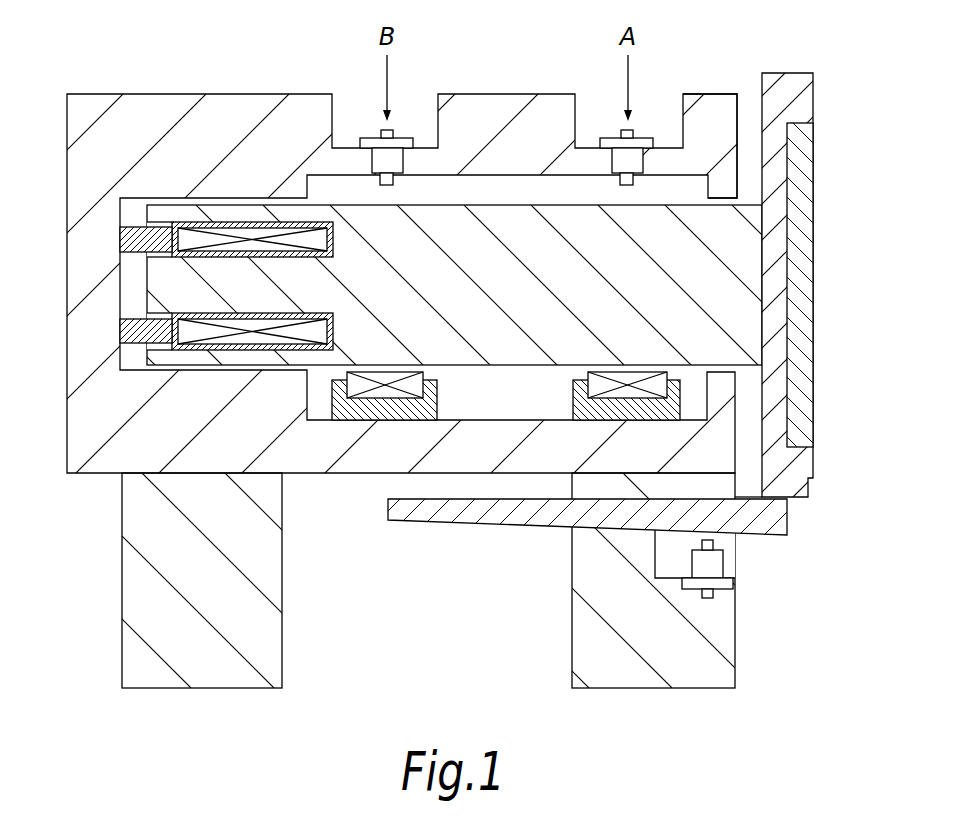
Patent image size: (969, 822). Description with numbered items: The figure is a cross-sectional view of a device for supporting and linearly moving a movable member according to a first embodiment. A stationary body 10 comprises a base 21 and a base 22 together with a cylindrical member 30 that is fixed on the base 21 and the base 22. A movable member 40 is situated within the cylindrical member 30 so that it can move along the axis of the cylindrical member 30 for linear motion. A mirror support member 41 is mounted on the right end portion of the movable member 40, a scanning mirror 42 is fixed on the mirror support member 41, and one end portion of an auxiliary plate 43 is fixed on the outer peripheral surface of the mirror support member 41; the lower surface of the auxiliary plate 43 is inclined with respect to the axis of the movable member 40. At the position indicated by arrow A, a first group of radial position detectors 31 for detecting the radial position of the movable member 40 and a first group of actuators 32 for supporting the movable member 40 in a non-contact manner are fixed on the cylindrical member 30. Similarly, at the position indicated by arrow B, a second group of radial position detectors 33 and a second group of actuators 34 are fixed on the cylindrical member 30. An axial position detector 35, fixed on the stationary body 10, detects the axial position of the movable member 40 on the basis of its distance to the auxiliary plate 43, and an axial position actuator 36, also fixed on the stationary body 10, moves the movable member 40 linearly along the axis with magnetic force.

The stationary body 10 is at (708, 94).
The cylindrical member 30 is at (110, 118).
The movable member 40 is at (515, 227).
The axial position actuator 36 is at (130, 239).
The second group of radial position detectors 33 is at (378, 157).
The first group of radial position detectors 31 is at (618, 157).
The second group of actuators 34 is at (413, 387).
The first group of actuators 32 is at (592, 388).
The base 21 is at (590, 663).
The base 22 is at (267, 662).
The mirror support member 41 is at (790, 80).
The scanning mirror 42 is at (803, 163).
The auxiliary plate 43 is at (777, 521).
The axial position detector 35 is at (713, 564).